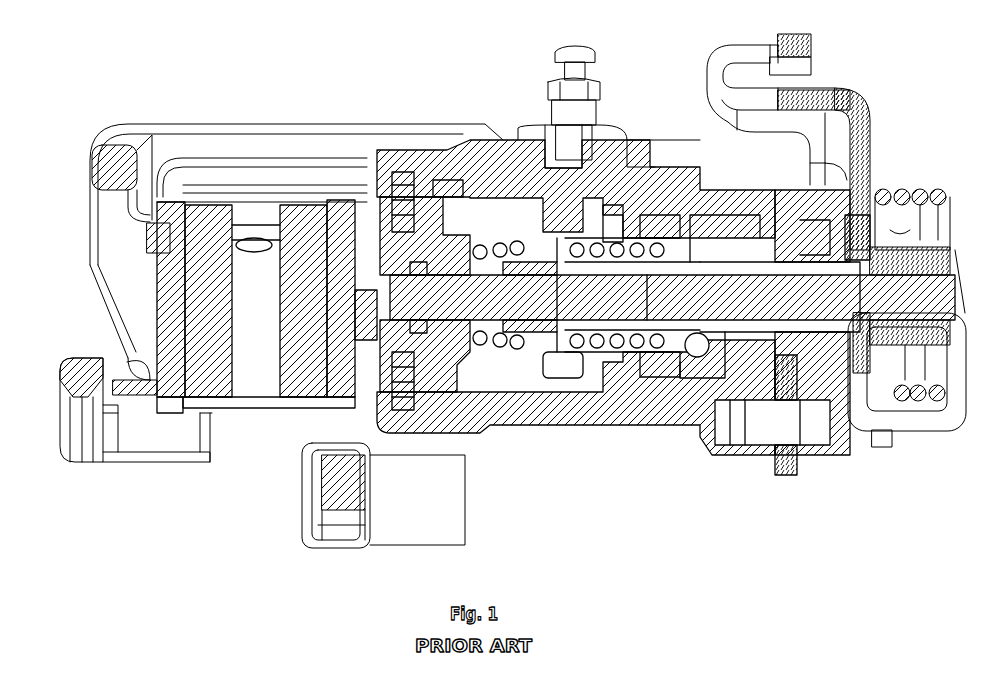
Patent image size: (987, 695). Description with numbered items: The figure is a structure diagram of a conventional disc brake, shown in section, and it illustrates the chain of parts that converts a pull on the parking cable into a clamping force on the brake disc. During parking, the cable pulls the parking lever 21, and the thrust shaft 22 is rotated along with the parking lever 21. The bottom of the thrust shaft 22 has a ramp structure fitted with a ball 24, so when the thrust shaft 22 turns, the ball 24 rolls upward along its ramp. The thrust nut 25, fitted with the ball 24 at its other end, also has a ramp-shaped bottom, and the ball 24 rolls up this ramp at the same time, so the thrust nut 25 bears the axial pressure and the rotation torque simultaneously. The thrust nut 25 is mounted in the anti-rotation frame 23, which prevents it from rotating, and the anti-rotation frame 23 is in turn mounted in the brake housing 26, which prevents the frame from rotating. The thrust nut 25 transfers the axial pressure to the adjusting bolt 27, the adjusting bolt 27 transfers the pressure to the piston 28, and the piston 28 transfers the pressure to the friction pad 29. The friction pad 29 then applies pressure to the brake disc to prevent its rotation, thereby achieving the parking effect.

The parking lever 21 is at (838, 90).
The thrust shaft 22 is at (828, 290).
The anti-rotation frame 23 is at (650, 228).
The ball 24 is at (695, 362).
The thrust nut 25 is at (628, 334).
The brake housing 26 is at (568, 402).
The adjusting bolt 27 is at (546, 300).
The piston 28 is at (462, 228).
The friction pad 29 is at (302, 228).